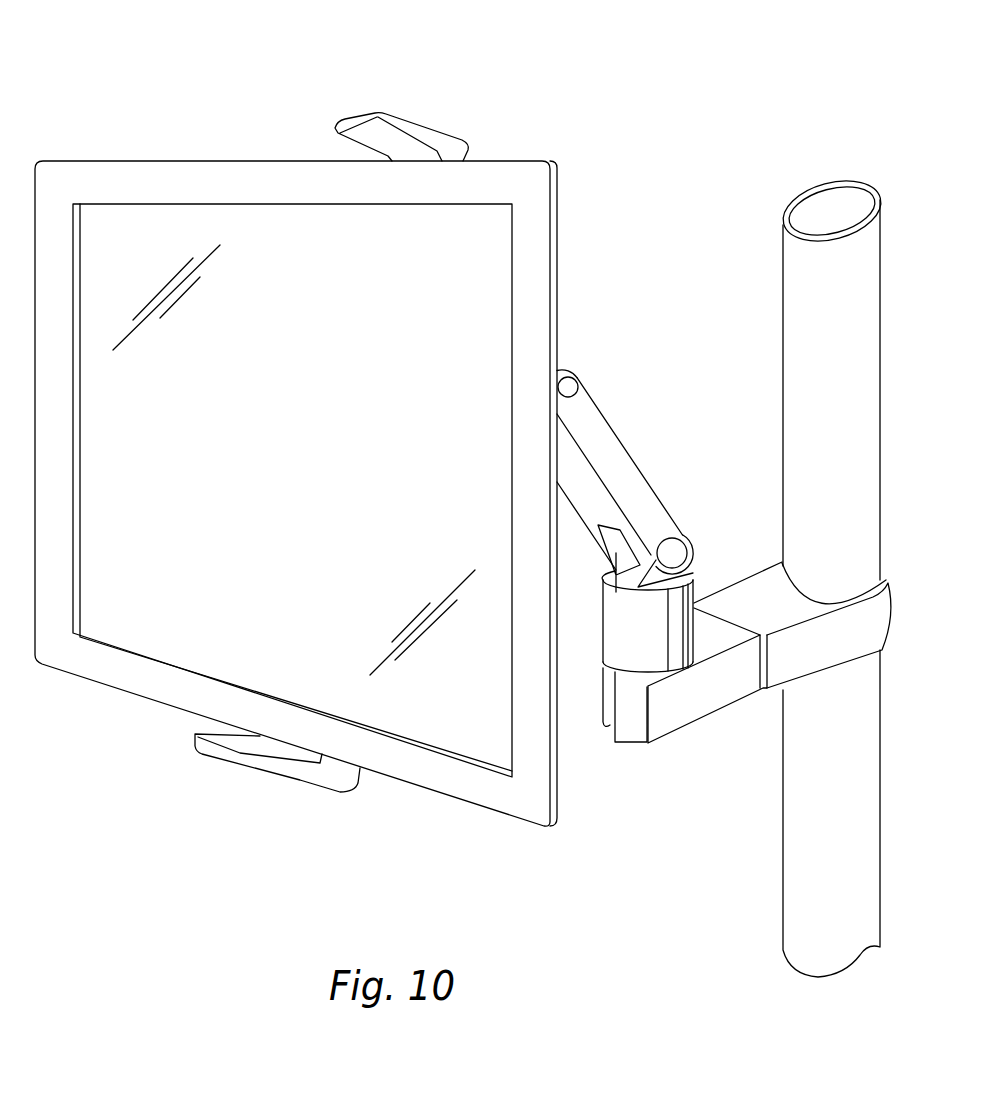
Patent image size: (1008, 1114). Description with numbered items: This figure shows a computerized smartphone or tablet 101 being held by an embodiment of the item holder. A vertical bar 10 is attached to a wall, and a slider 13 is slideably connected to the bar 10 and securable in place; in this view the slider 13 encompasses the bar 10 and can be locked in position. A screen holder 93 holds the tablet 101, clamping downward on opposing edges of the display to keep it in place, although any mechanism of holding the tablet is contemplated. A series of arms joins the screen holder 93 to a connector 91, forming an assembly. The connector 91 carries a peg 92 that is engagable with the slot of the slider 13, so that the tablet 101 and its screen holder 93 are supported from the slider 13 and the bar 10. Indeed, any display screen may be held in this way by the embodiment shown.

The tablet 101 is at (117, 182).
The screen holder 93 is at (428, 125).
The vertical bar 10 is at (800, 337).
The connector 91 is at (622, 607).
The peg 92 is at (625, 722).
The slider 13 is at (697, 700).